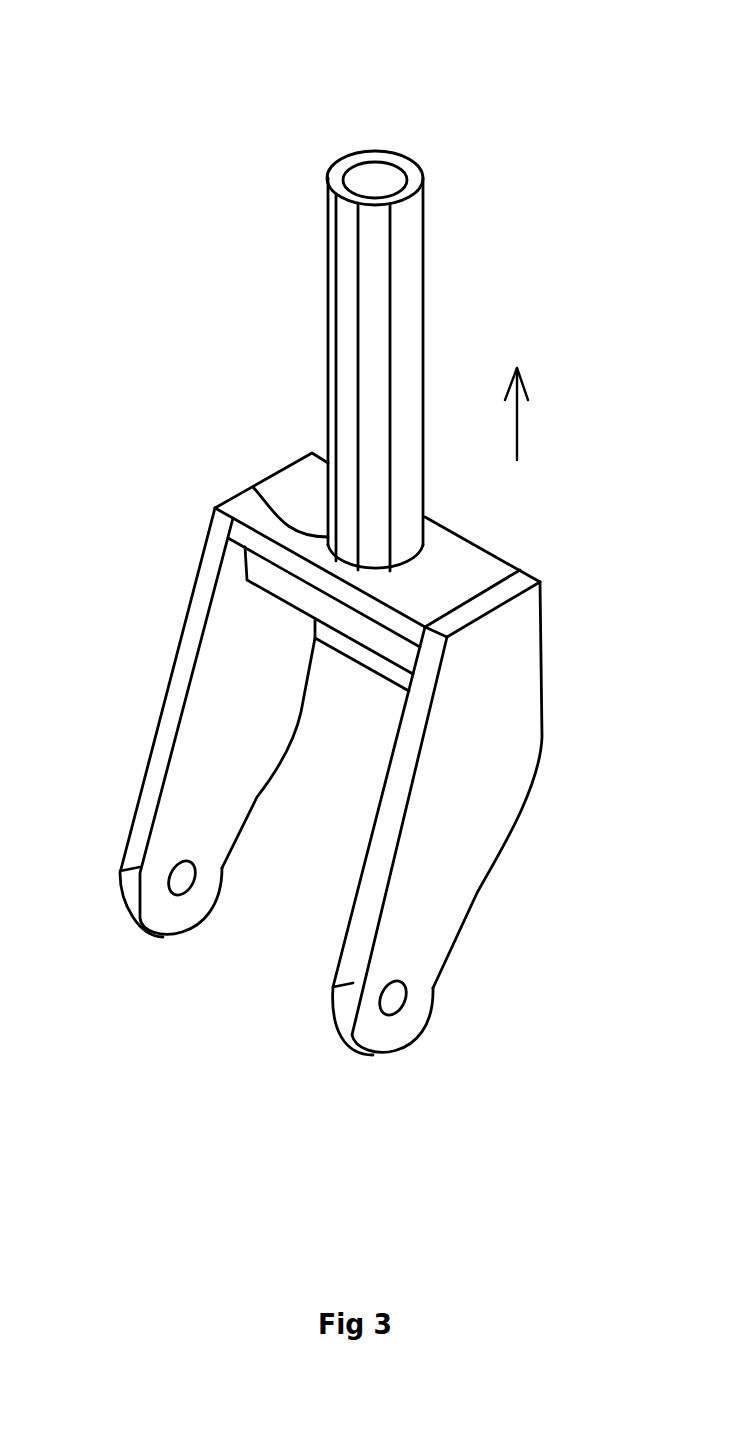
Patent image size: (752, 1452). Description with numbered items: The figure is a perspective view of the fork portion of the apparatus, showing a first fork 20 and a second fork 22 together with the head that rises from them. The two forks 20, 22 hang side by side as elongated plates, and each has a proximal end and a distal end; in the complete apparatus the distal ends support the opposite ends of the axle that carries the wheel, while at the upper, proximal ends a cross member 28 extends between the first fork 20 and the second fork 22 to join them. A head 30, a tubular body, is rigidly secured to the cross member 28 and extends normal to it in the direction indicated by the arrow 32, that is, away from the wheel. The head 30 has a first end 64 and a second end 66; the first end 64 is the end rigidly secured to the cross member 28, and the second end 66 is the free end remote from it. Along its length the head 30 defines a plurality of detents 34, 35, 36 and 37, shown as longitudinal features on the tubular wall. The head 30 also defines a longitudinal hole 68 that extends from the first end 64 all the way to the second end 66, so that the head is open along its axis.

The first fork 20 is at (475, 832).
The second fork 22 is at (200, 747).
The cross member 28 is at (488, 570).
The head 30 is at (371, 291).
The arrow 32 is at (518, 425).
The detent 34 is at (407, 245).
The detent 35 is at (377, 232).
The detent 36 is at (358, 232).
The detent 37 is at (328, 325).
The first end of the head 64 is at (253, 487).
The second end of the head 66 is at (407, 157).
The longitudinal hole 68 is at (332, 165).